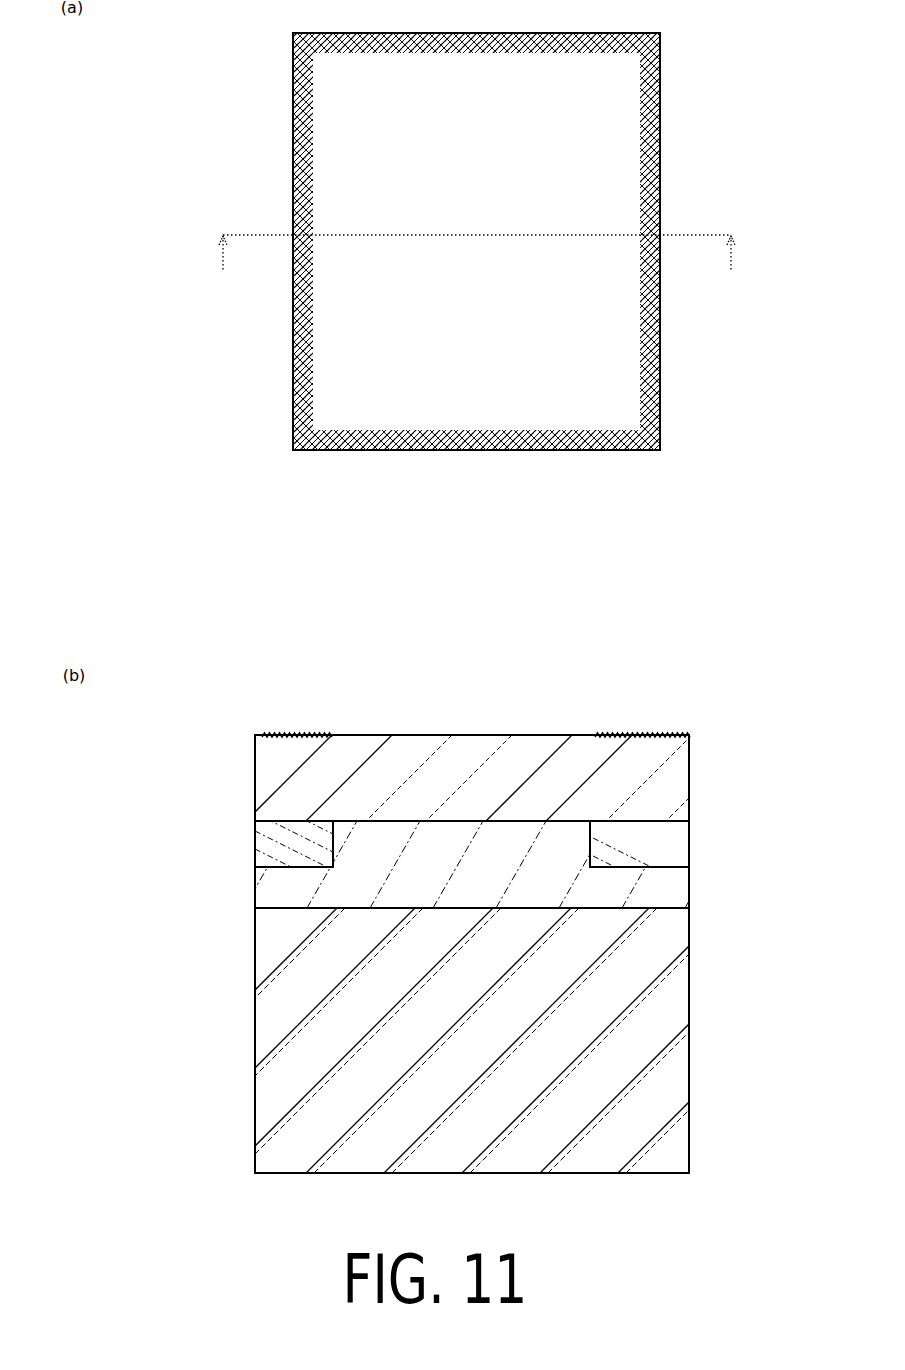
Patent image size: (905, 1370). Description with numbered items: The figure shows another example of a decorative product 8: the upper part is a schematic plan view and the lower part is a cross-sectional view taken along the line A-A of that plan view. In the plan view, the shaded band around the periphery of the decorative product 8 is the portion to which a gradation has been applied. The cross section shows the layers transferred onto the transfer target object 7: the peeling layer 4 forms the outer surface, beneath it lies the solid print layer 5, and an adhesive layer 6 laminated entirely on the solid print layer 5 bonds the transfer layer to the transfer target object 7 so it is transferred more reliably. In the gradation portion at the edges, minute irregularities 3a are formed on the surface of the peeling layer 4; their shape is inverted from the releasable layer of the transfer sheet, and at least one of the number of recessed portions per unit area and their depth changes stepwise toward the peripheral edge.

The decorative product 8 is at (700, 77).
The minute irregularities 3a is at (295, 718).
The peeling layer 4 is at (683, 783).
The solid print layer 5 is at (683, 853).
The adhesive layer 6 is at (683, 887).
The transfer target object 7 is at (683, 1057).